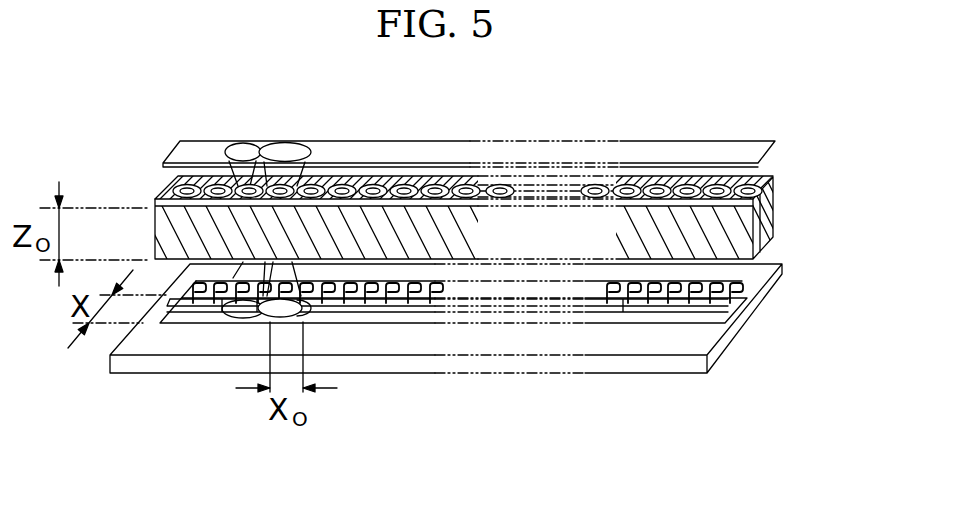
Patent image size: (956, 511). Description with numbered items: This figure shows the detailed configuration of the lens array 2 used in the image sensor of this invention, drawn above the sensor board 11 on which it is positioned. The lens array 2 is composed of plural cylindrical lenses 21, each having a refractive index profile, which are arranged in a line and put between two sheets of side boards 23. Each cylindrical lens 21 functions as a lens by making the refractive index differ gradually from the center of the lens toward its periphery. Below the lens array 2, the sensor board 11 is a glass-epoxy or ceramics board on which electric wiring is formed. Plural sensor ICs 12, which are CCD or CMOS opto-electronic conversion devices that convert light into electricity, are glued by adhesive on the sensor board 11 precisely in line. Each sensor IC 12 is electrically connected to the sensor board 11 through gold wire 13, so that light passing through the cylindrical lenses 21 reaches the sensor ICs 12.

The lens array 2 is at (163, 195).
The cylindrical lens 21 is at (180, 182).
The side board 23 is at (760, 176).
The sensor board 11 is at (697, 340).
The sensor IC 12 is at (672, 305).
The gold wire 13 is at (742, 286).